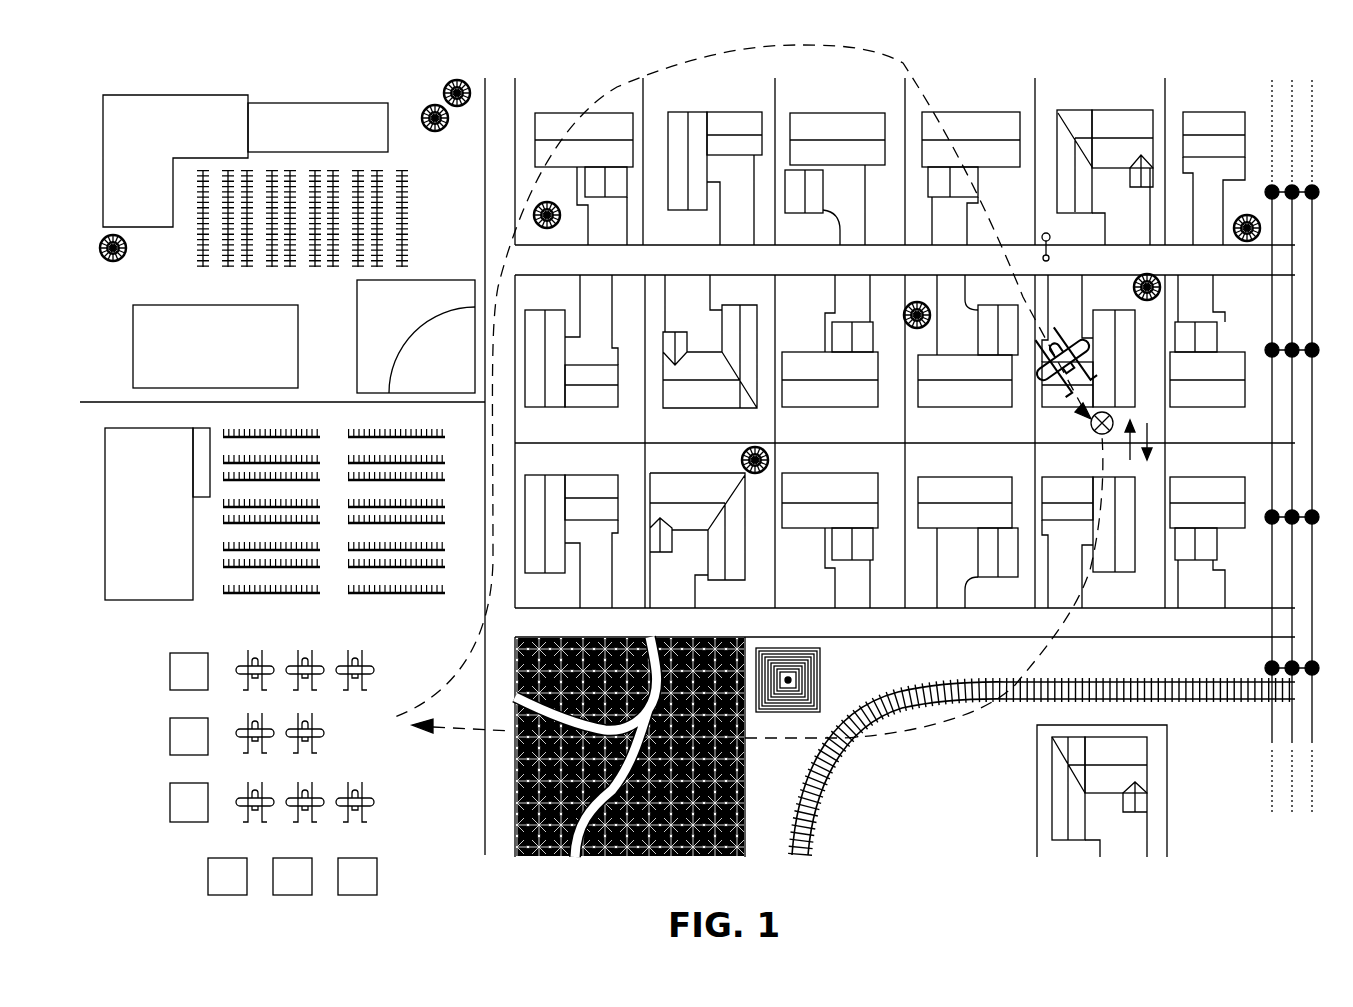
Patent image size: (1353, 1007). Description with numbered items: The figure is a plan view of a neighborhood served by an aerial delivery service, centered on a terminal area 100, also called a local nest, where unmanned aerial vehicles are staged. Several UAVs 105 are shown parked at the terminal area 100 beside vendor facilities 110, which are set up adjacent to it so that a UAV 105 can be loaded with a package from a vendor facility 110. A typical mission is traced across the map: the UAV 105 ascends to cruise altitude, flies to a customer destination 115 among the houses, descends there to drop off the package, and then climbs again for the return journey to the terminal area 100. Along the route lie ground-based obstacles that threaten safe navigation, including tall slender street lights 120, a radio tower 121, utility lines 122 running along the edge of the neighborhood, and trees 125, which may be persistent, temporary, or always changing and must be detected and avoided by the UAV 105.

The terminal area 100 is at (699, 488).
The unmanned aerial vehicle 105 is at (375, 668).
The vendor facility 110 is at (170, 738).
The customer destination 115 is at (1094, 430).
The street light 120 is at (1037, 218).
The radio tower 121 is at (845, 657).
The utility lines 122 is at (1252, 78).
The trees 125 is at (478, 95).